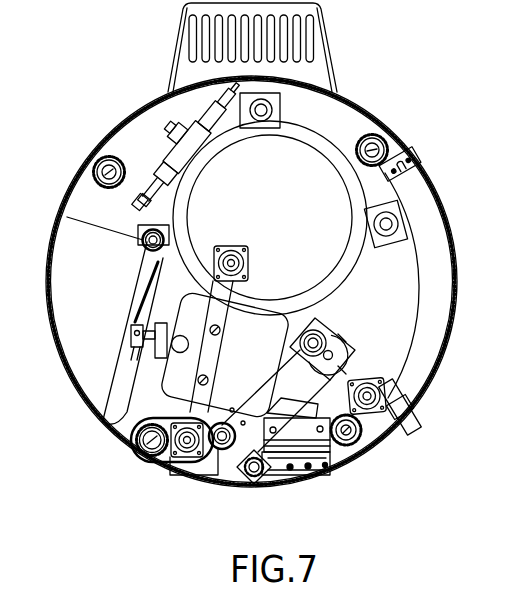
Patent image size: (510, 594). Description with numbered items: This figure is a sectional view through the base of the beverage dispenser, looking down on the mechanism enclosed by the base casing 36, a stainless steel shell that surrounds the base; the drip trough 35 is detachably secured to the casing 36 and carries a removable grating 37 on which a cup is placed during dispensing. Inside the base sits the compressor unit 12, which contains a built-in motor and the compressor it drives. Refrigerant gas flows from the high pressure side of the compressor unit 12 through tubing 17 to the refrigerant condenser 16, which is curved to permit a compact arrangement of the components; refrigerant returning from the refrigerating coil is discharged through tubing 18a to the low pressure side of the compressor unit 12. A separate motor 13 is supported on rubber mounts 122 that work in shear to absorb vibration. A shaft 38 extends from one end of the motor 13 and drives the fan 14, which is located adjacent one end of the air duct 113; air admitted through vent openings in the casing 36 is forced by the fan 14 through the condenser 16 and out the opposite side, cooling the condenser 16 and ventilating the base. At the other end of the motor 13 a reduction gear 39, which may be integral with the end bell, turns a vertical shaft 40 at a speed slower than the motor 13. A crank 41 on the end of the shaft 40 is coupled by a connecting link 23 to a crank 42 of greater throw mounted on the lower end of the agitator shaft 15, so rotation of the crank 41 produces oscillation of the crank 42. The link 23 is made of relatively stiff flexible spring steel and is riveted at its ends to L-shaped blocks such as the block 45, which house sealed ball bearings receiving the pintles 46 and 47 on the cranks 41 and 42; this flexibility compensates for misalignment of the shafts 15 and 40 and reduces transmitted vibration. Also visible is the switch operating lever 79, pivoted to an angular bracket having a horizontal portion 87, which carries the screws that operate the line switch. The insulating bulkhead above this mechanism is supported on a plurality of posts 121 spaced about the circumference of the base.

The compressor unit 12 is at (327, 148).
The motor 13 is at (186, 312).
The fan 14 is at (150, 272).
The agitator shaft 15 is at (253, 480).
The refrigerant condenser 16 is at (452, 268).
The tubing 17 is at (237, 88).
The tubing 18a is at (146, 205).
The connecting link 23 is at (283, 353).
The drip trough 35 is at (173, 44).
The base casing 36 is at (128, 118).
The grating 37 is at (310, 70).
The shaft 38 is at (148, 345).
The reduction gear 39 is at (342, 338).
The vertical shaft 40 is at (333, 356).
The crank 41 is at (342, 367).
The crank 42 is at (240, 462).
The block 45 is at (313, 328).
The pintle 46 is at (235, 413).
The pintle 47 is at (303, 355).
The switch operating lever 79 is at (302, 474).
The horizontal portion 87 is at (329, 466).
The air duct 113 is at (70, 356).
The post 121 is at (110, 186).
The mount 122 is at (248, 258).